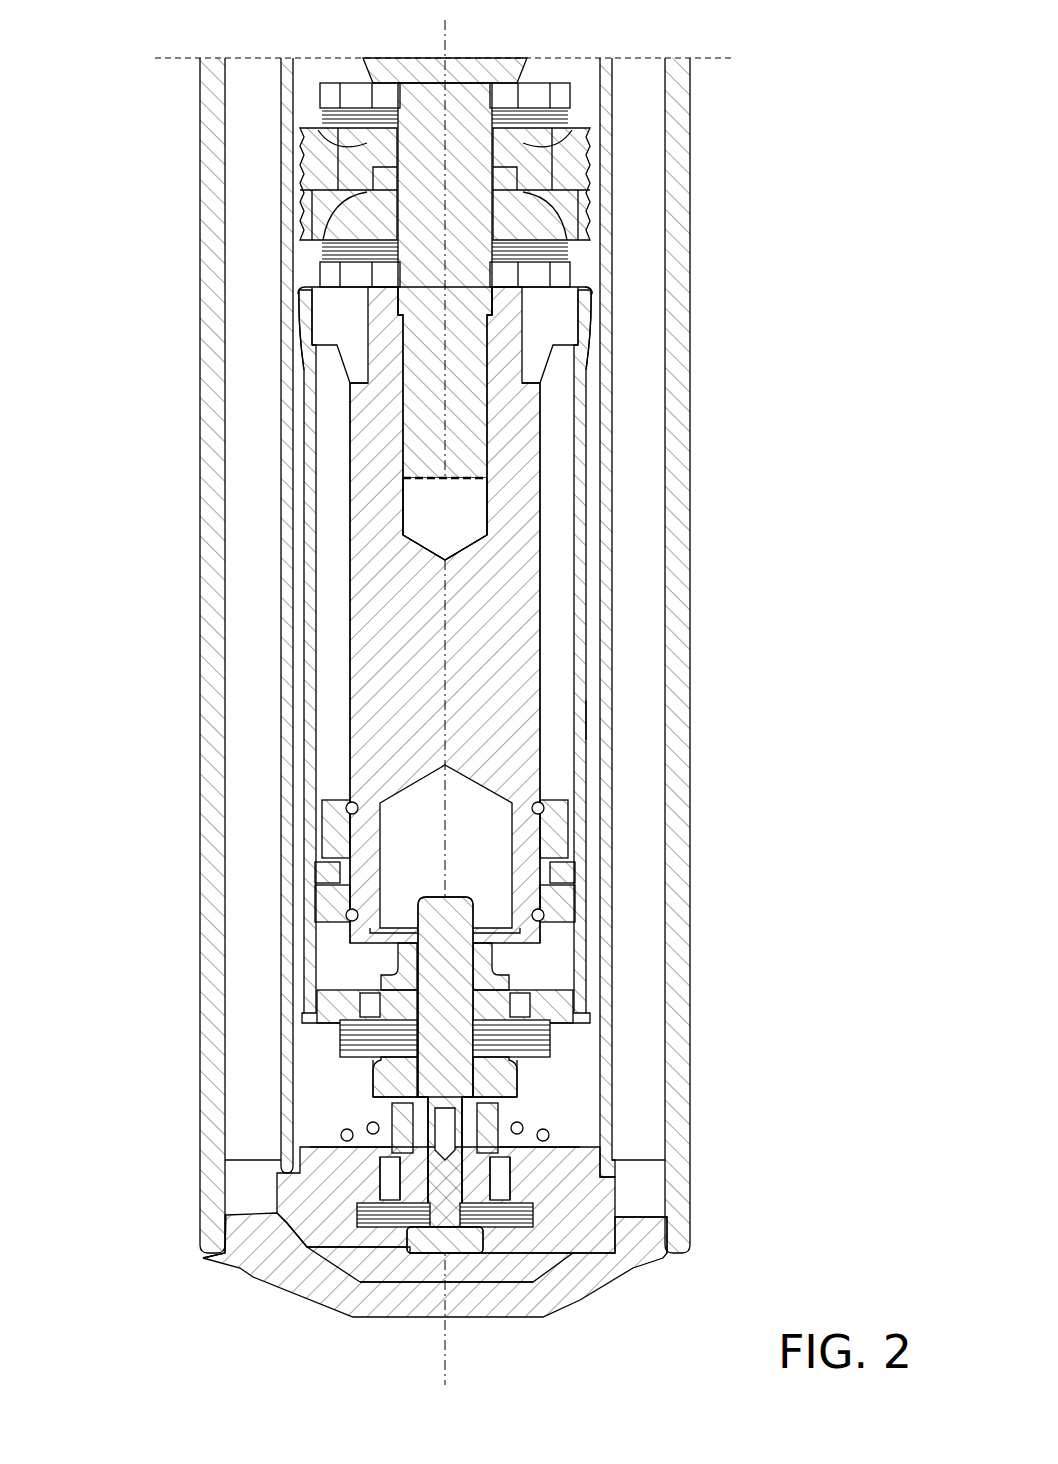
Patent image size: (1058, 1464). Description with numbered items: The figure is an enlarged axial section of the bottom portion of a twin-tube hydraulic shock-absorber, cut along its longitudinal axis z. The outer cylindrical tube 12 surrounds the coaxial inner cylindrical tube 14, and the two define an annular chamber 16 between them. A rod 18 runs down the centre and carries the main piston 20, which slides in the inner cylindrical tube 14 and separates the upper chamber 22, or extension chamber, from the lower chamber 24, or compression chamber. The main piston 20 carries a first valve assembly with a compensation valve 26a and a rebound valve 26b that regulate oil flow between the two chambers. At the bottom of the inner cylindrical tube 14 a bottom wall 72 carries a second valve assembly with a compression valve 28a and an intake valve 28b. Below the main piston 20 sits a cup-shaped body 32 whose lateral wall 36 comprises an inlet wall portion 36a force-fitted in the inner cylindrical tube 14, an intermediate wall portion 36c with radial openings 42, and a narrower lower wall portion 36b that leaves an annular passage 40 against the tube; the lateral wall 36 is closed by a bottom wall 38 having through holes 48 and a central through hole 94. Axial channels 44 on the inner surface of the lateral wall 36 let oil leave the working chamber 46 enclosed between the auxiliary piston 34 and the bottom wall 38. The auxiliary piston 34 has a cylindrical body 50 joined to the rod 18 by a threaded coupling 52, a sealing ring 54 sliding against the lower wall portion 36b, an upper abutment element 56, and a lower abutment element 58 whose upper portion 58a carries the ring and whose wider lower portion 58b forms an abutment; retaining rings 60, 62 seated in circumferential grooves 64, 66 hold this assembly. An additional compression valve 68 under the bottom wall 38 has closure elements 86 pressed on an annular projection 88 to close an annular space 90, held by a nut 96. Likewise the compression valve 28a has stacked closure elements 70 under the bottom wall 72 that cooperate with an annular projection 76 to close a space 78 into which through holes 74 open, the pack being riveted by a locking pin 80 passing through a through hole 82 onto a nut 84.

The outer cylindrical tube 12 is at (675, 503).
The inner cylindrical tube 14 is at (283, 477).
The annular chamber 16 is at (252, 520).
The rod 18 is at (480, 183).
The main piston 20 is at (597, 192).
The upper chamber 22 is at (307, 82).
The lower chamber 24 is at (300, 258).
The compensation valve 26a is at (560, 125).
The rebound valve 26b is at (563, 262).
The compression valve 28a is at (545, 1290).
The intake valve 28b is at (672, 1250).
The cup-shaped body 32 is at (588, 657).
The auxiliary piston 34 is at (585, 825).
The lateral wall 36 is at (310, 590).
The inlet wall portion 36a is at (597, 307).
The lower wall portion 36b is at (593, 723).
The intermediate wall portion 36c is at (310, 290).
The bottom wall 38 is at (560, 1045).
The annular passage 40 is at (310, 675).
The radial openings 42 is at (595, 320).
The axial channels 44 is at (327, 363).
The working chamber 46 is at (500, 975).
The through holes 48 is at (363, 1062).
The cylindrical body 50 is at (525, 625).
The threaded coupling 52 is at (395, 420).
The sealing ring 54 is at (580, 872).
The upper abutment element 56 is at (600, 800).
The lower abutment element 58 is at (578, 915).
The upper portion 58a is at (323, 872).
The lower portion 58b is at (343, 920).
The retaining ring 60 is at (323, 823).
The retaining ring 62 is at (350, 943).
The circumferential groove 64 is at (330, 800).
The circumferential groove 66 is at (545, 948).
The additional compression valve 68 is at (333, 1180).
The closure elements 70 is at (380, 1250).
The bottom wall 72 is at (300, 1255).
The through holes 74 is at (350, 1262).
The annular projection 76 is at (615, 1262).
The space 78 is at (428, 1240).
The locking pin 80 is at (470, 1245).
The through hole 82 is at (447, 1230).
The nut 84 is at (555, 1075).
The closure elements 86 is at (565, 1118).
The annular projection 88 is at (345, 1062).
The annular space 90 is at (203, 1258).
The through hole 94 is at (340, 1040).
The nut 96 is at (397, 965).
The longitudinal axis z is at (450, 605).